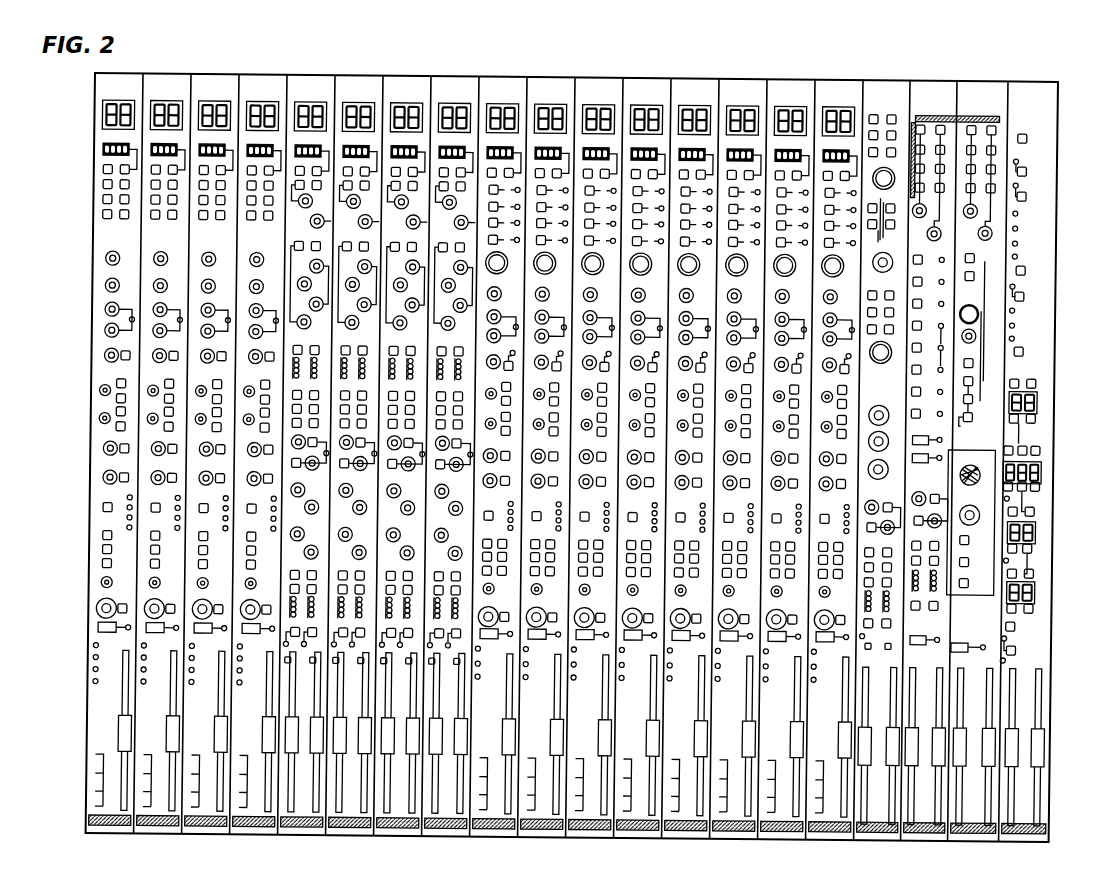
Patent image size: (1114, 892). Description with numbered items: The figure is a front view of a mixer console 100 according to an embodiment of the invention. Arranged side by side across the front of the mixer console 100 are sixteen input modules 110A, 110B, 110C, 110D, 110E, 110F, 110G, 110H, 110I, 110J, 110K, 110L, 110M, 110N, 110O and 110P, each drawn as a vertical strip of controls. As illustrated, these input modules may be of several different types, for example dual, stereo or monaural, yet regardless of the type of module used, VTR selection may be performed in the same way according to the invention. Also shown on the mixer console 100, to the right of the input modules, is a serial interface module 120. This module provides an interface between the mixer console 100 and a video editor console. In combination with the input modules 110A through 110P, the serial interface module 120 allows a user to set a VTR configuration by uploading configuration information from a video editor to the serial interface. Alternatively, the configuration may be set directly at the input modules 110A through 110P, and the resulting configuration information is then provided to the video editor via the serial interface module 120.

The mixer console 100 is at (989, 62).
The serial interface module 120 is at (1056, 73).
The input module 110A is at (96, 79).
The input module 110B is at (171, 73).
The input module 110C is at (219, 73).
The input module 110D is at (267, 73).
The input module 110E is at (315, 73).
The input module 110F is at (363, 73).
The input module 110G is at (411, 73).
The input module 110H is at (459, 73).
The input module 110I is at (507, 73).
The input module 110J is at (555, 73).
The input module 110K is at (603, 73).
The input module 110L is at (651, 73).
The input module 110M is at (699, 73).
The input module 110N is at (747, 73).
The input module 110O is at (795, 73).
The input module 110P is at (843, 73).